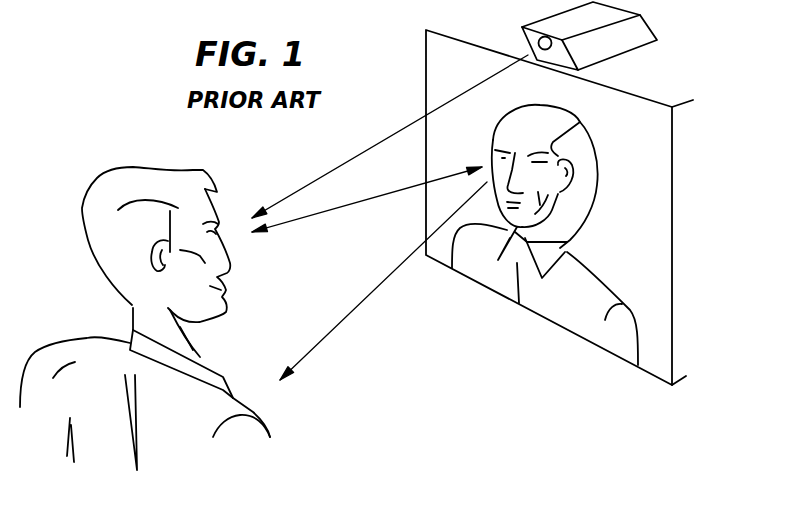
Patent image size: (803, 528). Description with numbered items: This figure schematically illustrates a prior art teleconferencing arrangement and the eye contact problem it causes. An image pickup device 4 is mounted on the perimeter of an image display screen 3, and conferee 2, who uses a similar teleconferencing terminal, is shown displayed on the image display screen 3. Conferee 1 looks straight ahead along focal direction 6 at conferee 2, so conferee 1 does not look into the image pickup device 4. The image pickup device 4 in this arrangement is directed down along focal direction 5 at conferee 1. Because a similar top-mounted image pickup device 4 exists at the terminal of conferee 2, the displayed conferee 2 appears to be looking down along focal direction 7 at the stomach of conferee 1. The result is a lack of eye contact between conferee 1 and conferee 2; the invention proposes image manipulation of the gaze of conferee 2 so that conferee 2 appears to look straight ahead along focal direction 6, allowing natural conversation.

The conferee 1 is at (88, 178).
The conferee 2 is at (597, 133).
The image display screen 3 is at (672, 215).
The image pickup device 4 is at (637, 48).
The focal direction 5 is at (382, 142).
The focal direction 6 is at (383, 195).
The focal direction 7 is at (332, 330).